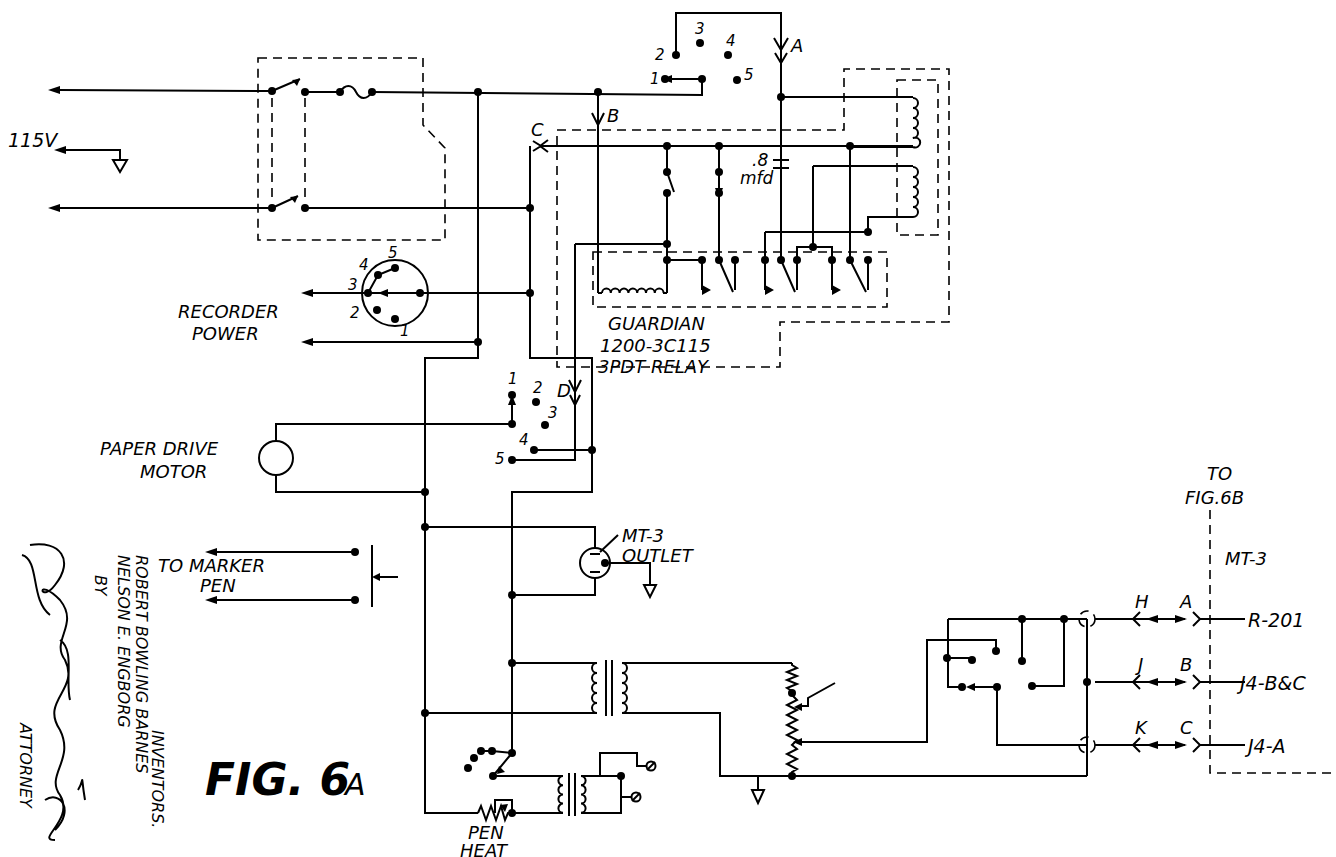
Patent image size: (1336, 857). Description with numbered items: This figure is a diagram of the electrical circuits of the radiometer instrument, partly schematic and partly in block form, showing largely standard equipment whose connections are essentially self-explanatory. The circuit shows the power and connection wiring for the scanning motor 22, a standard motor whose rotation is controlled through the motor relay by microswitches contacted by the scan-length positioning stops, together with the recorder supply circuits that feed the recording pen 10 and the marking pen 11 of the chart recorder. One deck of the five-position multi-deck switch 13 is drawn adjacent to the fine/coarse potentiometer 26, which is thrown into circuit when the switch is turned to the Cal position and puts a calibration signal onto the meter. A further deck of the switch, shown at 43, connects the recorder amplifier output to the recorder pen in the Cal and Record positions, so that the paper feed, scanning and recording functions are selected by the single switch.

The recording pen 10 is at (643, 802).
The marking pen 11 is at (658, 765).
The multi-deck switch 13 is at (1000, 670).
The scanning motor 22 is at (938, 213).
The fine/coarse potentiometer 26 is at (809, 721).
The switch deck 43 is at (518, 749).